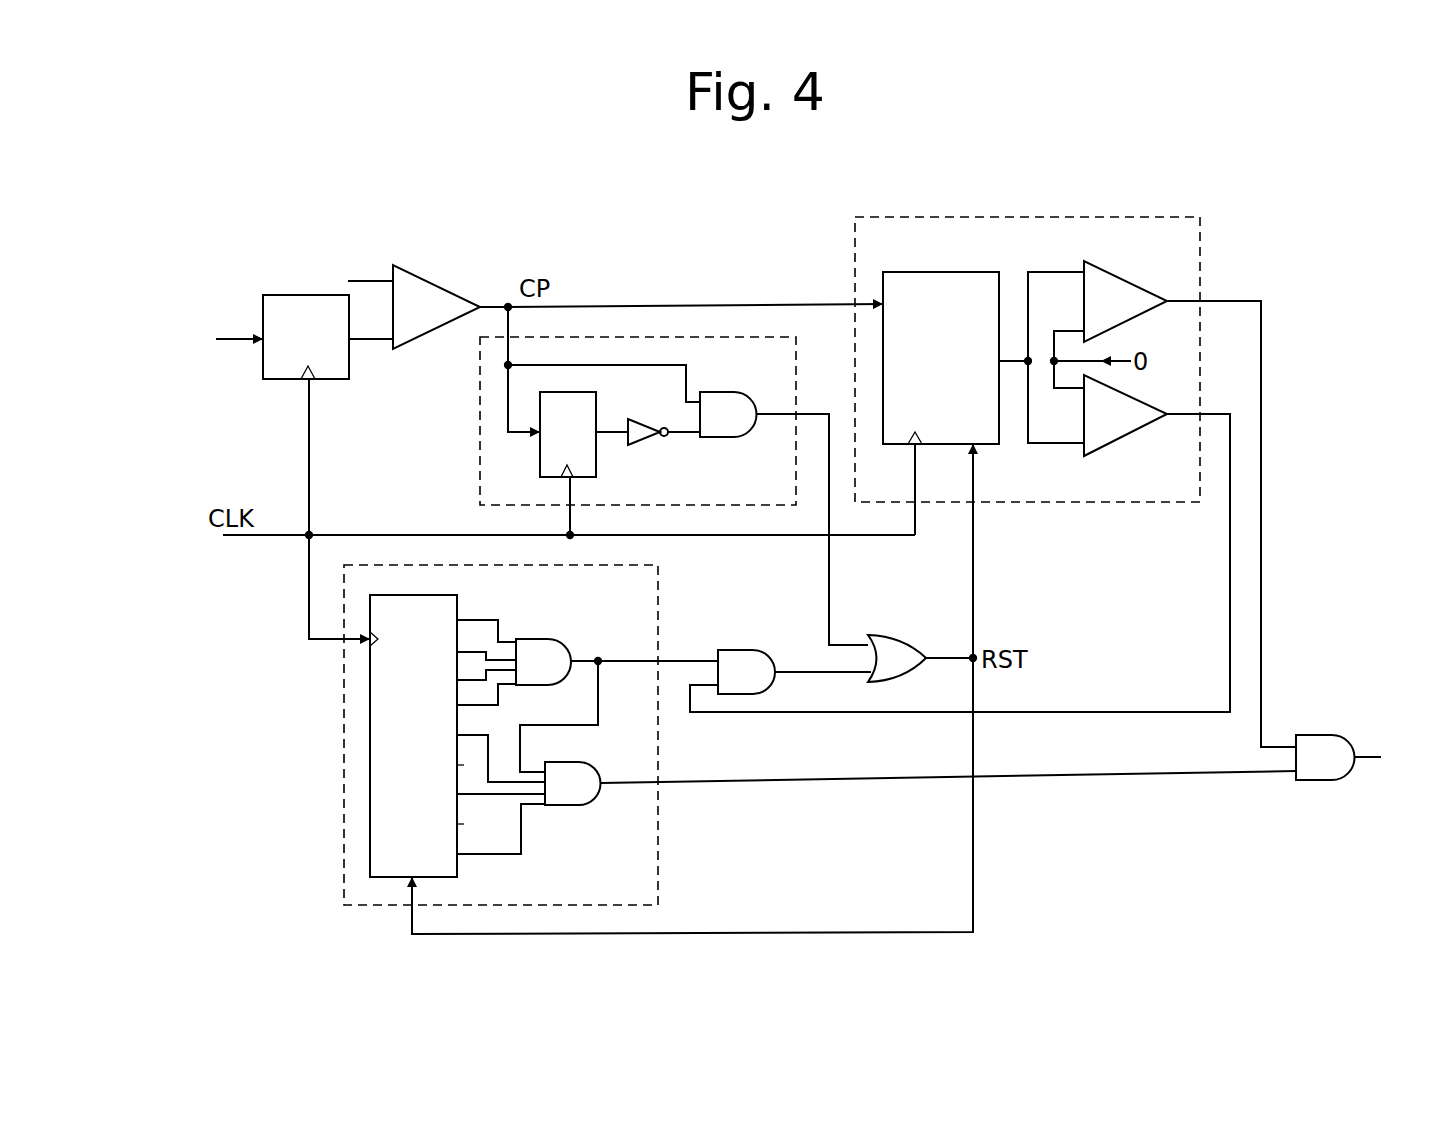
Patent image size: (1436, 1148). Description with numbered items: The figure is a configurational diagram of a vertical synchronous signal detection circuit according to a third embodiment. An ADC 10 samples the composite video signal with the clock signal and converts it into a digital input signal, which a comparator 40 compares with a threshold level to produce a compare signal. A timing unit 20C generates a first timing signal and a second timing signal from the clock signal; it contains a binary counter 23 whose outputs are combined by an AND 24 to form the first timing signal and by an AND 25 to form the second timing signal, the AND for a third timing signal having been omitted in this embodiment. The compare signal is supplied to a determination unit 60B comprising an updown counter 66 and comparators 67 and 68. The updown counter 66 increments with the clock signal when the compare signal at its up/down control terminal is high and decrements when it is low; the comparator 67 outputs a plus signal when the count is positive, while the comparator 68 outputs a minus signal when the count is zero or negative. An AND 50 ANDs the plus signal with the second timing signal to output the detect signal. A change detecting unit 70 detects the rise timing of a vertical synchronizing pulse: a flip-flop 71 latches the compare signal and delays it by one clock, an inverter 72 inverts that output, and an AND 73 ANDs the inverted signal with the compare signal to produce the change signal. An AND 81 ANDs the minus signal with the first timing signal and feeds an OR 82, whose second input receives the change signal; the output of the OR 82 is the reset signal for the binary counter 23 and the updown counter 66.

The ADC 10 is at (262, 384).
The comparator 40 is at (432, 275).
The change detecting unit 70 is at (477, 420).
The flip-flop 71 is at (575, 390).
The inverter 72 is at (645, 440).
The AND 73 is at (725, 388).
The determination unit 60B is at (852, 265).
The updown counter 66 is at (955, 270).
The comparator 67 is at (1105, 272).
The comparator 68 is at (1110, 444).
The timing unit 20C is at (341, 742).
The binary counter 23 is at (454, 594).
The AND 24 is at (528, 636).
The AND 25 is at (568, 804).
The AND 81 is at (718, 647).
The OR 82 is at (884, 631).
The AND 50 is at (1318, 730).